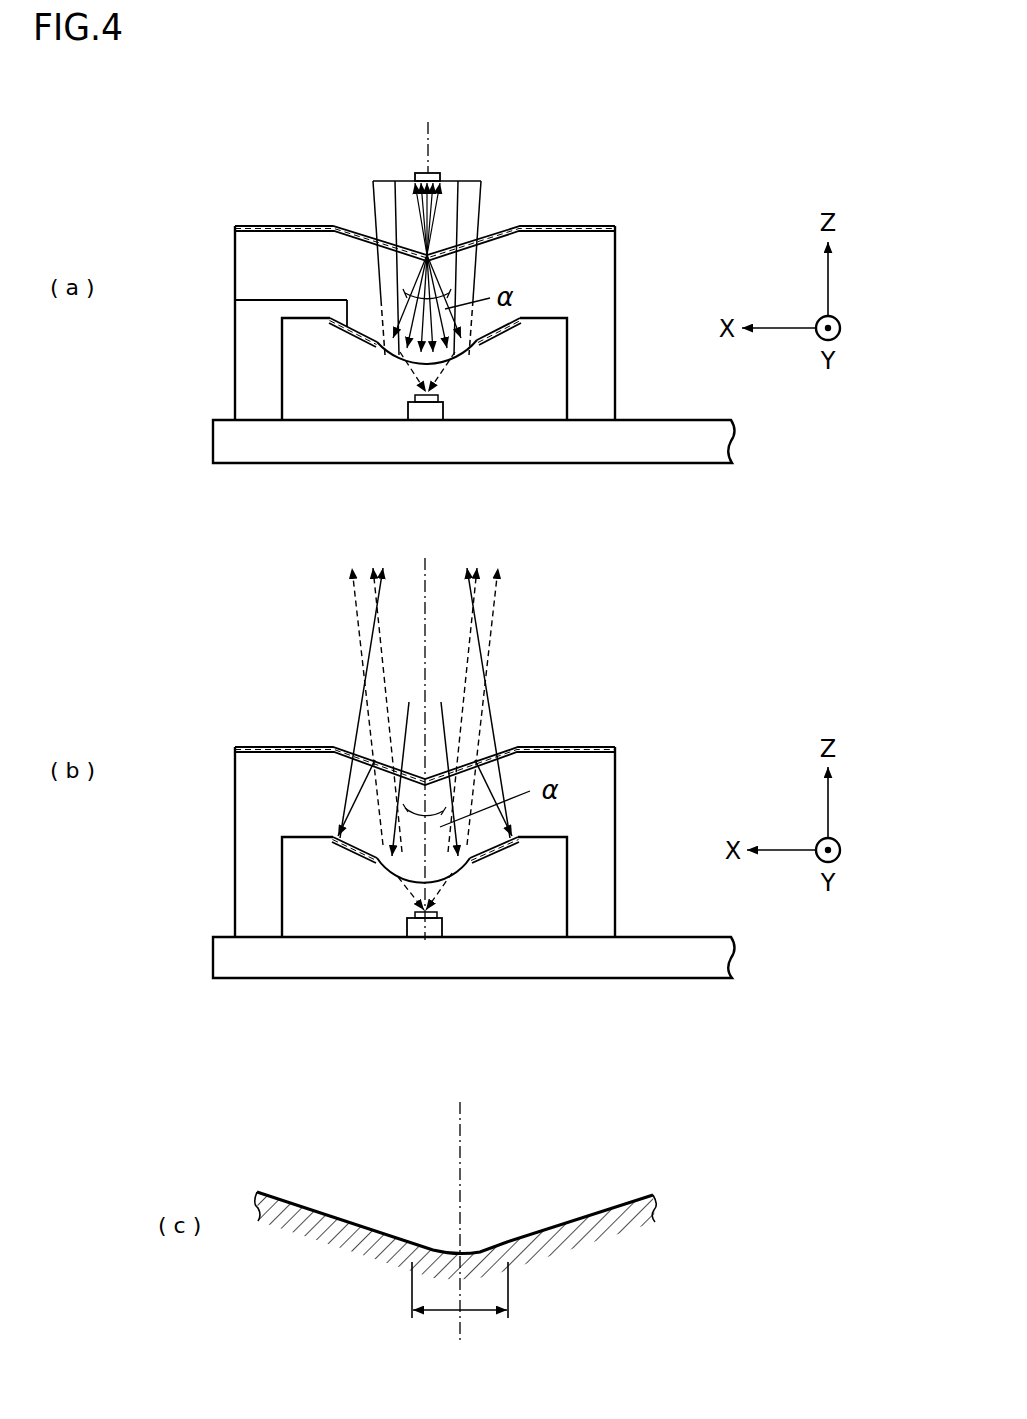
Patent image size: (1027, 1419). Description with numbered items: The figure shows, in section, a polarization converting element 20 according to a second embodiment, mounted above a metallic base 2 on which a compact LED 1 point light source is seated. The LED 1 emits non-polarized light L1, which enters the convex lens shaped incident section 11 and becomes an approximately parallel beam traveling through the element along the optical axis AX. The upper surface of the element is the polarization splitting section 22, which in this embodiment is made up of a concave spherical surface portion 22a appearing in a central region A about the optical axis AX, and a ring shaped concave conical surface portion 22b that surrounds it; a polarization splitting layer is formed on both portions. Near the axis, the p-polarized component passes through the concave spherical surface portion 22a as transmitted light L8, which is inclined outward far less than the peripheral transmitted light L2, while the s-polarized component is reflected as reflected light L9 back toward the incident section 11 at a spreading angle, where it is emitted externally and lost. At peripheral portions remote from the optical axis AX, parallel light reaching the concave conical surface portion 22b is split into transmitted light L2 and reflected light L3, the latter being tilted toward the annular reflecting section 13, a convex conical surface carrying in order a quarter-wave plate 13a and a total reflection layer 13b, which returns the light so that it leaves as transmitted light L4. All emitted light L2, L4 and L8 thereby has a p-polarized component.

The LED 1 is at (411, 413).
The base 2 is at (682, 431).
The incident section 11 is at (452, 357).
The annular reflecting section 13 is at (500, 332).
The quarter-wave plate 13a is at (235, 300).
The total reflection layer 13b is at (353, 335).
The polarization converting element 20 is at (626, 230).
The polarization splitting section 22 is at (510, 225).
The concave spherical surface portion 22a is at (434, 1247).
The concave conical surface portion 22b is at (355, 1222).
The optical axis AX is at (433, 128).
The region A is at (478, 1312).
The light L1 is at (413, 377).
The transmitted light L2 is at (358, 617).
The reflected light L3 is at (352, 812).
The transmitted light L4 is at (358, 690).
The transmitted light L8 is at (431, 172).
The reflected light L9 is at (413, 287).